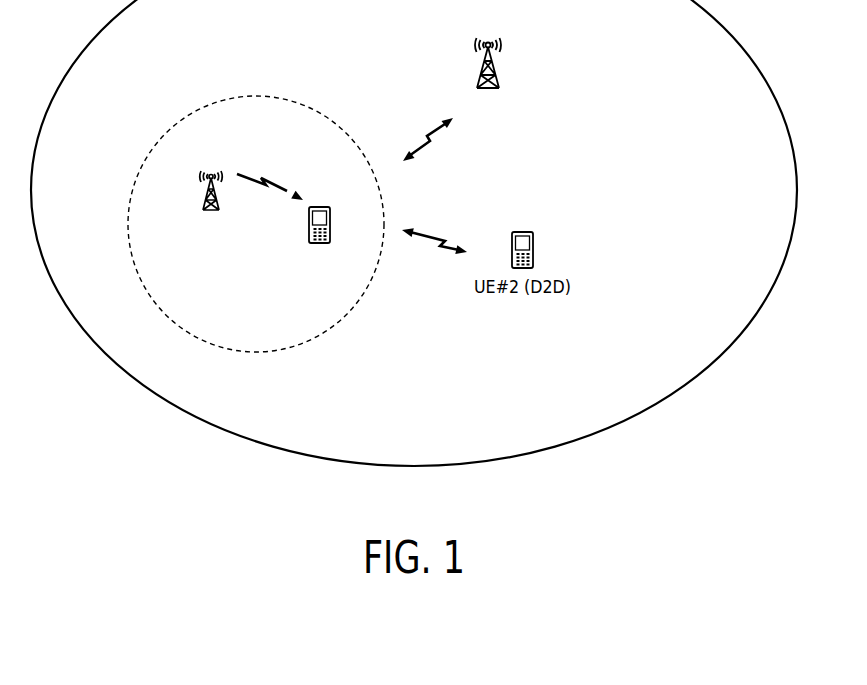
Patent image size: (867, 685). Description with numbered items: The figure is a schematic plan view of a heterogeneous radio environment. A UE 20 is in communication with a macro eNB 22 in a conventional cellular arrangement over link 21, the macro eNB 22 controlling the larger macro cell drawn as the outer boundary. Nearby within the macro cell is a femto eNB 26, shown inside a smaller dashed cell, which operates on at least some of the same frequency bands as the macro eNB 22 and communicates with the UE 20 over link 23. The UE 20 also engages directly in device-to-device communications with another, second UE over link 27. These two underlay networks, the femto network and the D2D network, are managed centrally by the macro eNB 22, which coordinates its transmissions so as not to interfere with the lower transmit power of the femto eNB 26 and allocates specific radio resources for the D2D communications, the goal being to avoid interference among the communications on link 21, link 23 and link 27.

The UE 20 is at (320, 244).
The link 21 is at (433, 139).
The macro eNB 22 is at (499, 76).
The link 23 is at (267, 177).
The femto eNB 26 is at (210, 212).
The link 27 is at (447, 248).